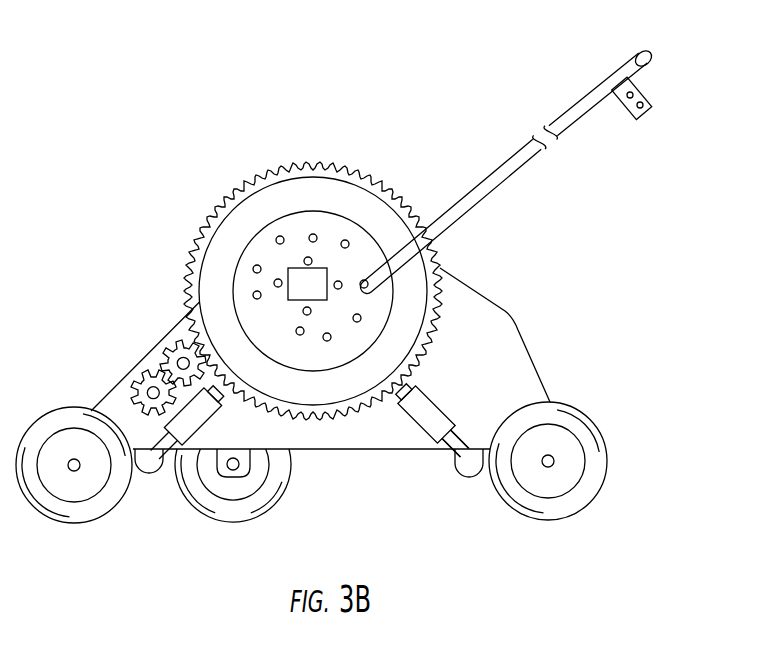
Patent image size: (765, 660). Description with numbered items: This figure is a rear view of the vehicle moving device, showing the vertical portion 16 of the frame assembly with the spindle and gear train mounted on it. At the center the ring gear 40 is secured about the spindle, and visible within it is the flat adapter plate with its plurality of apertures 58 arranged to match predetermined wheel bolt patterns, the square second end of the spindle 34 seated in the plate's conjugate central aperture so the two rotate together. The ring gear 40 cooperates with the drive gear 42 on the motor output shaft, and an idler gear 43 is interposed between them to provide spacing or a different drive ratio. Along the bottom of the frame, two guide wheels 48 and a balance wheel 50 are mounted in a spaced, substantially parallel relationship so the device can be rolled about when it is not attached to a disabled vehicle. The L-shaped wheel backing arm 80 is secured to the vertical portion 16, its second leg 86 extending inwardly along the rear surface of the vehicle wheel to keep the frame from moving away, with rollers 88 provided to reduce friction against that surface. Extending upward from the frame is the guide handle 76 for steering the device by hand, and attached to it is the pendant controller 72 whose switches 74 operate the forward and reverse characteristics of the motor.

The vertical portion 16 is at (508, 363).
The second end of the spindle 34 is at (289, 277).
The ring gear 40 is at (188, 291).
The drive gear 42 is at (133, 392).
The idler gears 43 is at (168, 352).
The guide wheels 48 is at (77, 522).
The balance wheel 50 is at (211, 507).
The apertures 58 is at (348, 244).
The pendant controller 72 is at (652, 103).
The switches 74 is at (643, 87).
The guide handle 76 is at (580, 110).
The wheel backing arm 80 is at (452, 458).
The second leg 86 is at (430, 448).
The rollers 88 is at (420, 418).